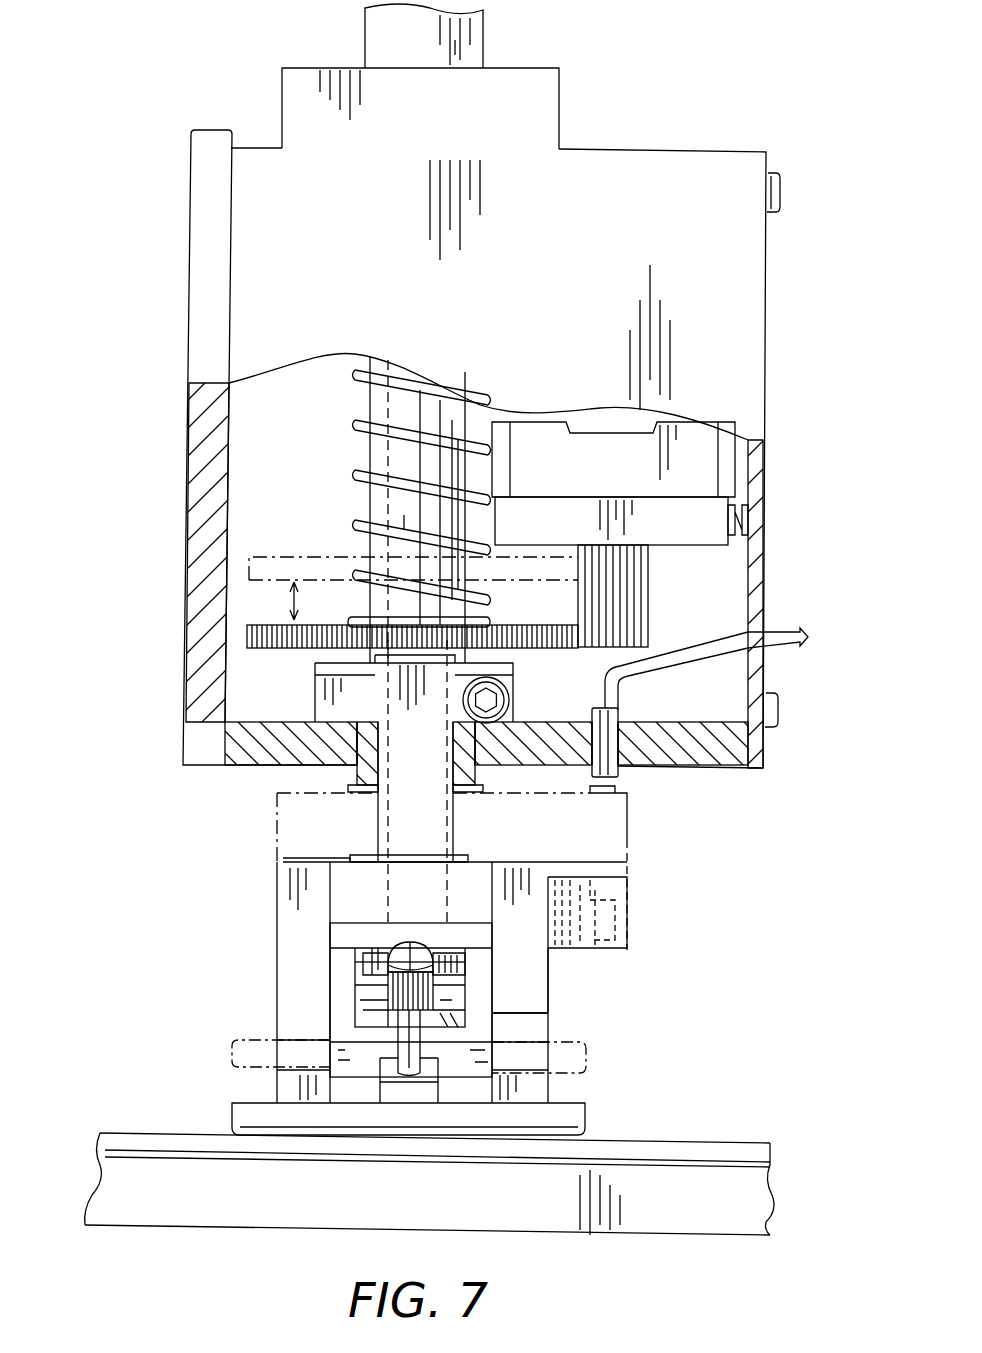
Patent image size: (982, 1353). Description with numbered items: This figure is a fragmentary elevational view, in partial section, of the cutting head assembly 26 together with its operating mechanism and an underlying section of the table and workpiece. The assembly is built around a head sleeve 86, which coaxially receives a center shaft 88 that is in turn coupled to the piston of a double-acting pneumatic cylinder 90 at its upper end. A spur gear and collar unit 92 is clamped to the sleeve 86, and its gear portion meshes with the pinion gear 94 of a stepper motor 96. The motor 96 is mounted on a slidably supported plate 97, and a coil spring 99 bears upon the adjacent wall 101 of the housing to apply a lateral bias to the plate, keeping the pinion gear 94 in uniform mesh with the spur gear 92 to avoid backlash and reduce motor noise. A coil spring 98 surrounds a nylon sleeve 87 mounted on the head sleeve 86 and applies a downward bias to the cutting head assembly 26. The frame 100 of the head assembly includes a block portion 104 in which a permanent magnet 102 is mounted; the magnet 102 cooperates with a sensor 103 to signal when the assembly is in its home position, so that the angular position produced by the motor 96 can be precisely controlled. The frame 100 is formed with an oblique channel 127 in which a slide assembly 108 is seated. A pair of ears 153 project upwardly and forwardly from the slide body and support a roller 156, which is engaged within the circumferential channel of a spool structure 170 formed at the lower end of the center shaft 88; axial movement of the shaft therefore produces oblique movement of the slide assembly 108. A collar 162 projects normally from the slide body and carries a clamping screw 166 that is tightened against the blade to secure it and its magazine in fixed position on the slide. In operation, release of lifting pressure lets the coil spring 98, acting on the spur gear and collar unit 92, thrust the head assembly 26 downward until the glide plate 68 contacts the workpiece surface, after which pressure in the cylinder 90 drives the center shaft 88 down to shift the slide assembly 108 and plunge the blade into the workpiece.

The pneumatic cylinder 90 is at (458, 44).
The nylon sleeve 87 is at (425, 418).
The coil spring 98 is at (357, 424).
The center shaft 88 is at (404, 515).
The spur gear and collar unit 92 is at (322, 555).
The stepper motor 96 is at (685, 462).
The slidably supported plate 97 is at (548, 528).
The coil spring 99 is at (740, 520).
The pinion gear 94 is at (625, 590).
The adjacent wall 101 is at (748, 565).
The sensor 103 is at (605, 725).
The cutting head assembly 26 is at (256, 812).
The head sleeve 86 is at (455, 836).
The frame 100 is at (280, 902).
The permanent magnet 102 is at (628, 910).
The block portion 104 is at (565, 950).
The oblique channel 127 is at (494, 1015).
The roller 156 is at (362, 985).
The ears 153 is at (338, 990).
The spool structure 170 is at (374, 962).
The clamping screw 166 is at (422, 948).
The collar 162 is at (418, 1103).
The slide assembly 108 is at (330, 1010).
The glide plate 68 is at (232, 1052).